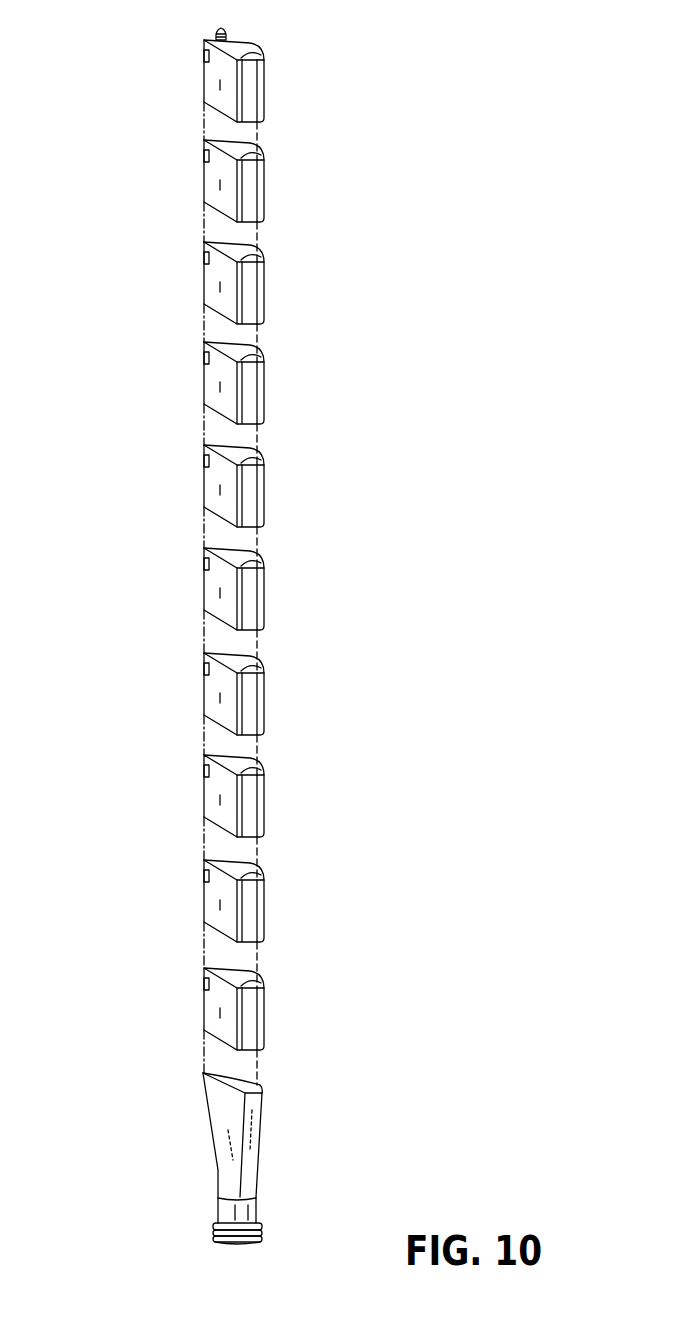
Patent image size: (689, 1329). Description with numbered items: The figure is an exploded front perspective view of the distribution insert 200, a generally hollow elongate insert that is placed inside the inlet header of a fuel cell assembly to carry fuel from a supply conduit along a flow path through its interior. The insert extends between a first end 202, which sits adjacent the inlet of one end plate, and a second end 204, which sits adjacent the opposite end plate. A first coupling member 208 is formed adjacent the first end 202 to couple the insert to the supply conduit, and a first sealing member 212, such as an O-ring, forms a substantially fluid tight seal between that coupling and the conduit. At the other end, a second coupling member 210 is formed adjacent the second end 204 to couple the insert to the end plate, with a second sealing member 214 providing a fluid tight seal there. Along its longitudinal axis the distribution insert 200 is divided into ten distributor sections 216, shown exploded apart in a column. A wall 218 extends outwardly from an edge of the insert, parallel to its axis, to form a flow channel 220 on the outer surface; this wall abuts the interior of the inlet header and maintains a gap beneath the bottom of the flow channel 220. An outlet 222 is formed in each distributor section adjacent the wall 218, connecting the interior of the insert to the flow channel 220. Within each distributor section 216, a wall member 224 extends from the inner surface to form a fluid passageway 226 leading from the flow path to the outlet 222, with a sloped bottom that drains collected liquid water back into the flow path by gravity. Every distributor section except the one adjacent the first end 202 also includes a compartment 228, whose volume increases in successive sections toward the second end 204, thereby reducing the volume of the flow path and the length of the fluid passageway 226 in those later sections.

The distribution insert 200 is at (121, 176).
The first end 202 is at (258, 1207).
The second end 204 is at (252, 50).
The first coupling member 208 is at (262, 1238).
The second coupling member 210 is at (218, 31).
The first sealing member 212 is at (215, 1225).
The second sealing member 214 is at (213, 38).
The distributor sections 216 is at (203, 683).
The wall 218 is at (233, 590).
The flow channel 220 is at (228, 370).
The outlet 222 is at (215, 548).
The wall member 224 is at (253, 664).
The fluid passageway 226 is at (235, 758).
The compartment 228 is at (226, 443).